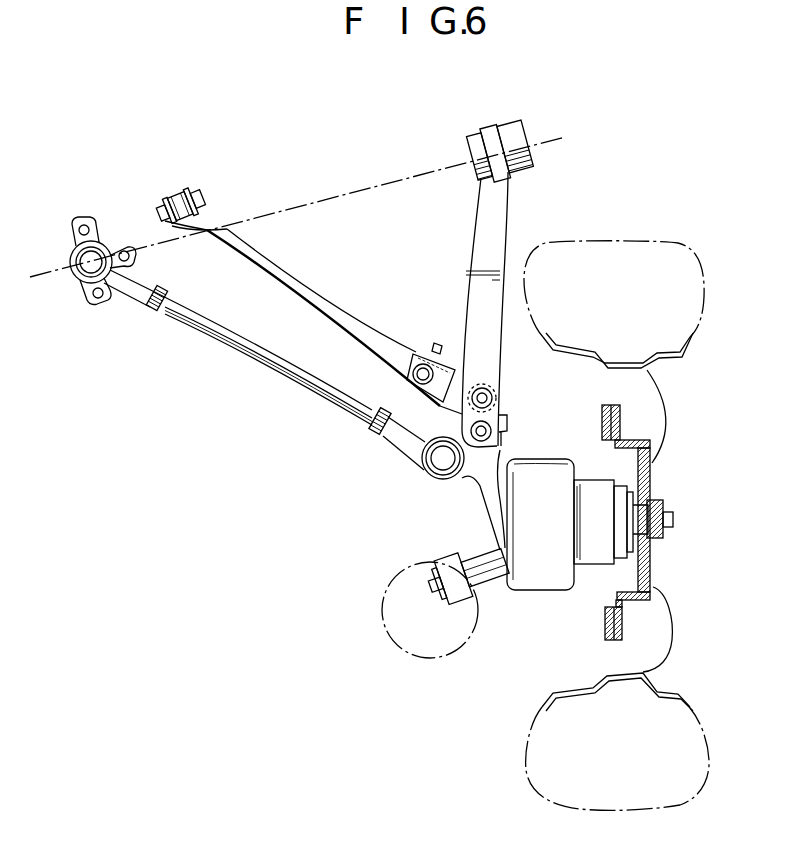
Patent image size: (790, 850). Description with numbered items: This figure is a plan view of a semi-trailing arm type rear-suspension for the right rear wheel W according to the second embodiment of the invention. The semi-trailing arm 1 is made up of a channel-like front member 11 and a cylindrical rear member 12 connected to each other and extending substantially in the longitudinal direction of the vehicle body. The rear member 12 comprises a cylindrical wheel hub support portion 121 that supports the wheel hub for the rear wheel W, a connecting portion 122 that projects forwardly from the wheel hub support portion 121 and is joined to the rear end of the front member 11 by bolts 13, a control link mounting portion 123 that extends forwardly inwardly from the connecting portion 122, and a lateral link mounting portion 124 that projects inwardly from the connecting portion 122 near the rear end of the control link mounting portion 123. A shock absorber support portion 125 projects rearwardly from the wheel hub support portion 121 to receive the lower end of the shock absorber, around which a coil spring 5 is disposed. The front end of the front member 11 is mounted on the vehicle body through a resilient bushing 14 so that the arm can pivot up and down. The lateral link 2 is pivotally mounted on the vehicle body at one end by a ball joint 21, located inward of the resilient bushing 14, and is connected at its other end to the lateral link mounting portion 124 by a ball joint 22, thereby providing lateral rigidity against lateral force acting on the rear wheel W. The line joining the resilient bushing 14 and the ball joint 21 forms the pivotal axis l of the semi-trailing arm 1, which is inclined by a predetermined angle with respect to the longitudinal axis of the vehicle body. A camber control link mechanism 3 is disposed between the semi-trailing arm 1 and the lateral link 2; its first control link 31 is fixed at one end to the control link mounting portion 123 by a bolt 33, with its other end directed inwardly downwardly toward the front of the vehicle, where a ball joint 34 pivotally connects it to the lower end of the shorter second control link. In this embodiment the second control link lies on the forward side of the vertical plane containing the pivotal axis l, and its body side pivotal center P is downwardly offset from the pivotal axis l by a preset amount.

The semi-trailing arm 1 is at (507, 365).
The lateral link 2 is at (276, 384).
The camber control link mechanism 3 is at (291, 280).
The coil spring 5 is at (452, 656).
The front member 11 is at (509, 263).
The rear member 12 is at (514, 506).
The bolts 13 is at (491, 396).
The resilient bushing 14 is at (512, 124).
The ball joint 21 is at (75, 284).
The ball joint 22 is at (432, 478).
The first control link 31 is at (357, 330).
The bolt 33 is at (410, 345).
The ball joint 34 is at (183, 190).
The wheel hub support portion 121 is at (553, 578).
The connecting portion 122 is at (499, 412).
The control link mounting portion 123 is at (435, 410).
The lateral link mounting portion 124 is at (463, 480).
The shock absorber support portion 125 is at (490, 589).
The body side pivotal center P is at (167, 203).
The right rear wheel W is at (653, 240).
The pivotal axis l is at (373, 186).